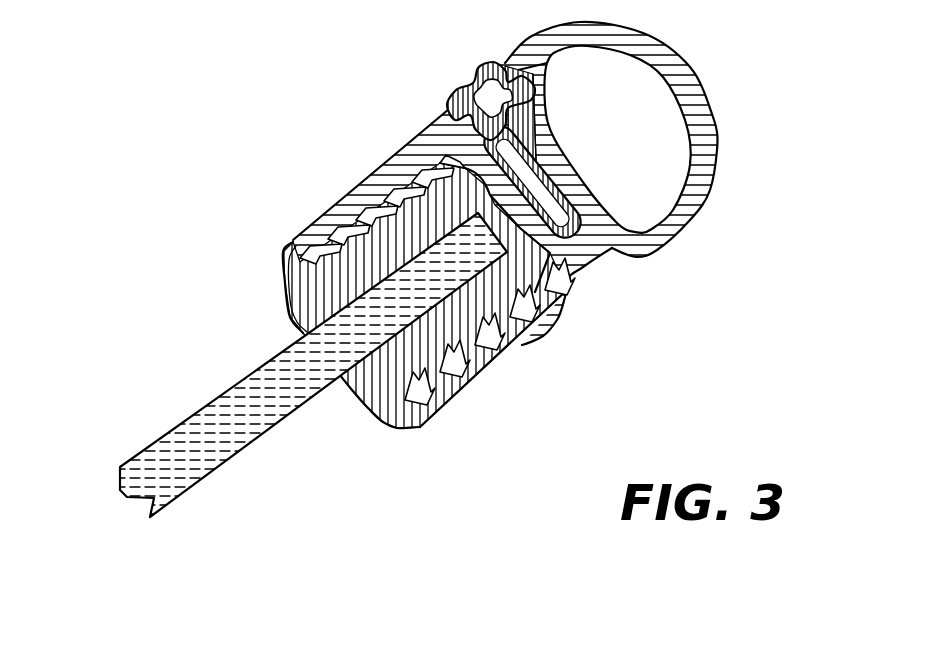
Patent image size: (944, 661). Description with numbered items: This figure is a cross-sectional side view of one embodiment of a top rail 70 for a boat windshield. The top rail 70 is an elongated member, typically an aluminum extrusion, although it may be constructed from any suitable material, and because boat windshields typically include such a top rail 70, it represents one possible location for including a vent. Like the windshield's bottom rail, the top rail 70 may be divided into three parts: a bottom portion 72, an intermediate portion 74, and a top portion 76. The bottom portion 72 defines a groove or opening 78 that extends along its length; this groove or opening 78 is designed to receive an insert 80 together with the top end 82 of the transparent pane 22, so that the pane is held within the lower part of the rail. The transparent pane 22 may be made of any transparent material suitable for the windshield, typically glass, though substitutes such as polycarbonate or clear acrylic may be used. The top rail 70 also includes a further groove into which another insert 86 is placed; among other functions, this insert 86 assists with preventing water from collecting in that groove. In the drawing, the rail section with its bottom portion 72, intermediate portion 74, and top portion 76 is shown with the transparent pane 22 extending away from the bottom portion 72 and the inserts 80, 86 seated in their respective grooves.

The top rail 70 is at (423, 297).
The bottom portion 72 is at (437, 415).
The intermediate portion 74 is at (603, 268).
The top portion 76 is at (720, 190).
The groove or opening 78 is at (522, 335).
The insert 80 is at (377, 400).
The top end 82 is at (455, 232).
The insert 86 is at (455, 93).
The transparent pane 22 is at (118, 490).